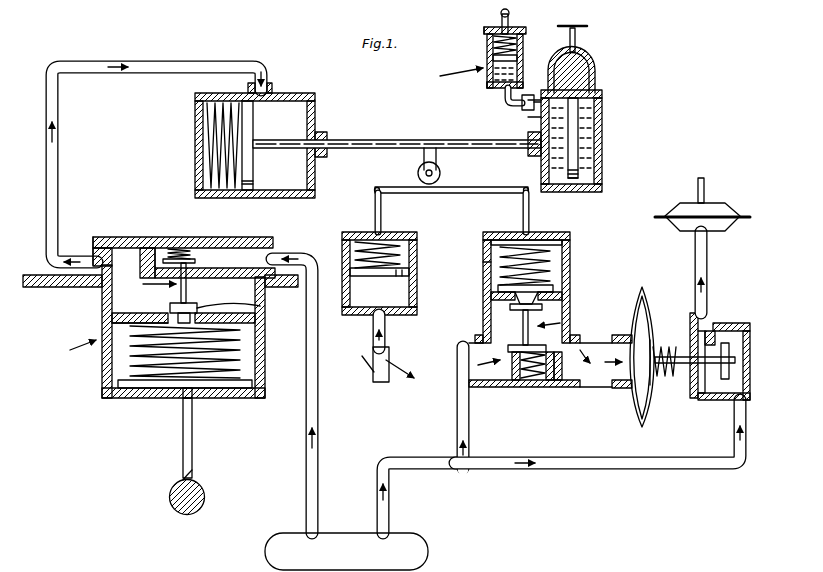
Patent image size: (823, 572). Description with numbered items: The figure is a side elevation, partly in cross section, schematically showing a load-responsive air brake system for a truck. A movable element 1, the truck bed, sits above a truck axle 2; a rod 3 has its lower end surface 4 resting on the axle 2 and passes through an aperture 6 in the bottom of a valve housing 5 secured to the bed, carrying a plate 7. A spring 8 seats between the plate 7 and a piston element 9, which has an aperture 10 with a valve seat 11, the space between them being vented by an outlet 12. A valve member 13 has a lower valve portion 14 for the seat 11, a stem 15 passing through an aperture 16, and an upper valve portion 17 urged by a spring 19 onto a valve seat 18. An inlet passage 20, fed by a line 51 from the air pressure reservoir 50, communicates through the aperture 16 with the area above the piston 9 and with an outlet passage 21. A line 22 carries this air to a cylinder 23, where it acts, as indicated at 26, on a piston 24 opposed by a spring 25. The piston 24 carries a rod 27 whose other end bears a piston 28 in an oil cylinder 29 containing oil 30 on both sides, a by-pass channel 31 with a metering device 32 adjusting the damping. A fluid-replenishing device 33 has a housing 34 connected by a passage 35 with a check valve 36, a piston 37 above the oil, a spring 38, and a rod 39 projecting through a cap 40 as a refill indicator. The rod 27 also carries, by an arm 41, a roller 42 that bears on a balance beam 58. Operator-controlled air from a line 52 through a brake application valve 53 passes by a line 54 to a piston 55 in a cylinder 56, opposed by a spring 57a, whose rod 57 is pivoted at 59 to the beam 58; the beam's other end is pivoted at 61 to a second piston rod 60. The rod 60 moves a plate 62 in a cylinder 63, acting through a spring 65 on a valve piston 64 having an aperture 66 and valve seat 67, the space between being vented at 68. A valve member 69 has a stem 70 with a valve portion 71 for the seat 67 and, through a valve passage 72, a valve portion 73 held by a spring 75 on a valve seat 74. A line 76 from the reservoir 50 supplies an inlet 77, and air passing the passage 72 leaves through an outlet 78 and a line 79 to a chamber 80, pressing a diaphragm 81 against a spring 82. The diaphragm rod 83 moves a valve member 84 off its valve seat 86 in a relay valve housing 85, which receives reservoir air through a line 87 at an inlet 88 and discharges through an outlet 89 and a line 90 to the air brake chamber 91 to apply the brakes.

The movable element 1 is at (56, 286).
The truck axle 2 is at (169, 497).
The rod 3 is at (181, 454).
The lower end surface 4 is at (193, 472).
The valve housing 5 is at (165, 317).
The aperture 6 is at (178, 400).
The plate 7 is at (145, 389).
The spring 8 is at (132, 366).
The plate or piston element 9 is at (118, 323).
The aperture 10 is at (260, 318).
The valve seat 11 is at (172, 306).
The passage or outlet 12 is at (266, 332).
The valve member 13 is at (150, 283).
The lower valve portion 14 is at (200, 310).
The stem 15 is at (190, 290).
The aperture 16 is at (222, 270).
The valve portion 17 is at (200, 250).
The valve seat 18 is at (166, 256).
The spring 19 is at (193, 247).
The inlet passage 20 is at (282, 256).
The outlet passage 21 is at (93, 262).
The line 22 is at (58, 176).
The cylinder 23 is at (316, 104).
The piston 24 is at (252, 186).
The spring 25 is at (214, 121).
The air delivery side 26 is at (266, 92).
The rod 27 is at (342, 140).
The piston 28 is at (576, 120).
The cylinder 29 is at (603, 166).
The oil 30 is at (588, 142).
The by-pass channel 31 is at (596, 76).
The metering device 32 is at (587, 24).
The fluid-replenishing device 33 is at (478, 57).
The housing 34 is at (490, 86).
The passage 35 is at (505, 106).
The check valve 36 is at (526, 111).
The piston 37 is at (494, 58).
The spring 38 is at (517, 46).
The rod 39 is at (511, 14).
The cap 40 is at (490, 30).
The arm 41 is at (422, 160).
The roller 42 is at (441, 170).
The air pressure reservoir 50 is at (364, 530).
The line 51 is at (306, 430).
The line 52 is at (410, 384).
The brake application valve 53 is at (375, 384).
The line 54 is at (373, 344).
The piston 55 is at (410, 274).
The cylinder 56 is at (404, 313).
The rod 57 is at (375, 213).
The spring 57a is at (397, 241).
The balance beam or rock arm 58 is at (520, 184).
The pivotal connection 59 is at (378, 187).
The second piston rod 60 is at (533, 213).
The pivotal connection 61 is at (531, 195).
The plate 62 is at (500, 244).
The cylinder 63 is at (568, 246).
The valve piston 64 is at (494, 292).
The spring 65 is at (552, 265).
The aperture 66 is at (537, 290).
The valve seat 67 is at (517, 303).
The vent 68 is at (483, 262).
The valve member 69 is at (562, 323).
The stem 70 is at (505, 347).
The valve portion 71 is at (543, 306).
The valve passage 72 is at (525, 382).
The valve portion 73 is at (480, 362).
The valve seat 74 is at (498, 349).
The spring 75 is at (531, 382).
The line 76 is at (450, 462).
The inlet 77 is at (492, 388).
The outlet 78 is at (548, 388).
The line 79 is at (602, 392).
The chamber 80 is at (638, 419).
The diaphragm 81 is at (648, 312).
The spring 82 is at (666, 345).
The rod 83 is at (690, 368).
The valve member 84 is at (731, 358).
The relay valve housing 85 is at (751, 366).
The valve seat 86 is at (725, 328).
The line 87 is at (652, 468).
The inlet 88 is at (733, 408).
The outlet 89 is at (705, 313).
The line 90 is at (708, 262).
The air brake chamber 91 is at (696, 202).